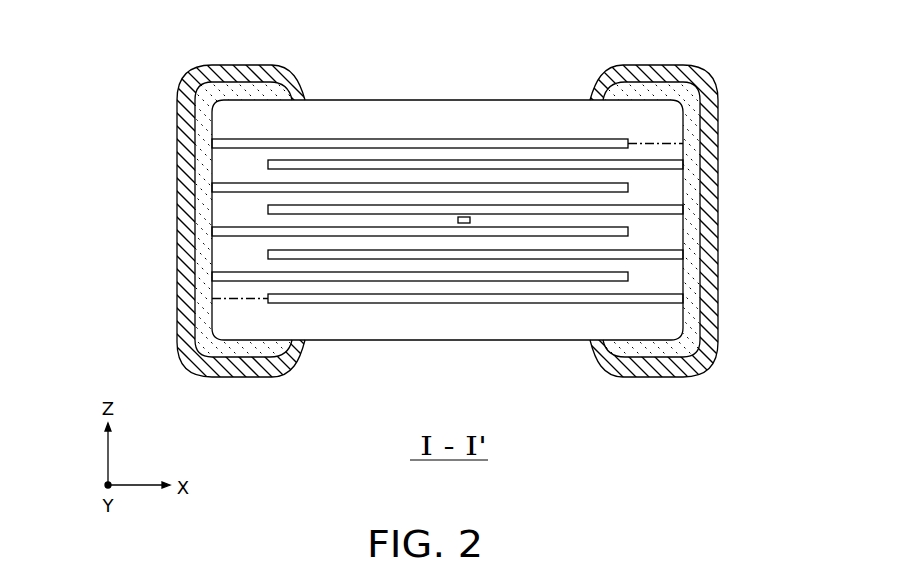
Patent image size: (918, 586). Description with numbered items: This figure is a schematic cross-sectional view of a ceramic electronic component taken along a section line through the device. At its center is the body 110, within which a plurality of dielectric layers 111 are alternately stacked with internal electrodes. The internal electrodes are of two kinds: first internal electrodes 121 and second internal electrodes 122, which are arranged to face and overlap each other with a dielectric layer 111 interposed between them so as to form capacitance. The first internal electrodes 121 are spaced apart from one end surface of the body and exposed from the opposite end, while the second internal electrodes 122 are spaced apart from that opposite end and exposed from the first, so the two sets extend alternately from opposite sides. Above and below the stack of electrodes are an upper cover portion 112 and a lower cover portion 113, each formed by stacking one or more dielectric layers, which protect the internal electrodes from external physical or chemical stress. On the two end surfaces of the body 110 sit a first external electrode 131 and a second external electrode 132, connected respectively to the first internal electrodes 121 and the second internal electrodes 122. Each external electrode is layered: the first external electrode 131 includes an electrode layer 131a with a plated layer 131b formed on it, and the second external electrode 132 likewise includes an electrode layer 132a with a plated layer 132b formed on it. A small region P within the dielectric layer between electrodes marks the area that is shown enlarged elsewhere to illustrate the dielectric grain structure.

The body 110 is at (447, 204).
The dielectric layer 111 is at (447, 207).
The upper cover portion 112 is at (453, 115).
The lower cover portion 113 is at (452, 323).
The first internal electrode 121 is at (519, 146).
The second internal electrode 122 is at (577, 163).
The first external electrode 131 is at (459, 220).
The electrode layer 131a is at (192, 150).
The plated layer 131b is at (181, 176).
The second external electrode 132 is at (459, 220).
The electrode layer 132a is at (692, 127).
The plated layer 132b is at (712, 152).
The region P is at (472, 222).